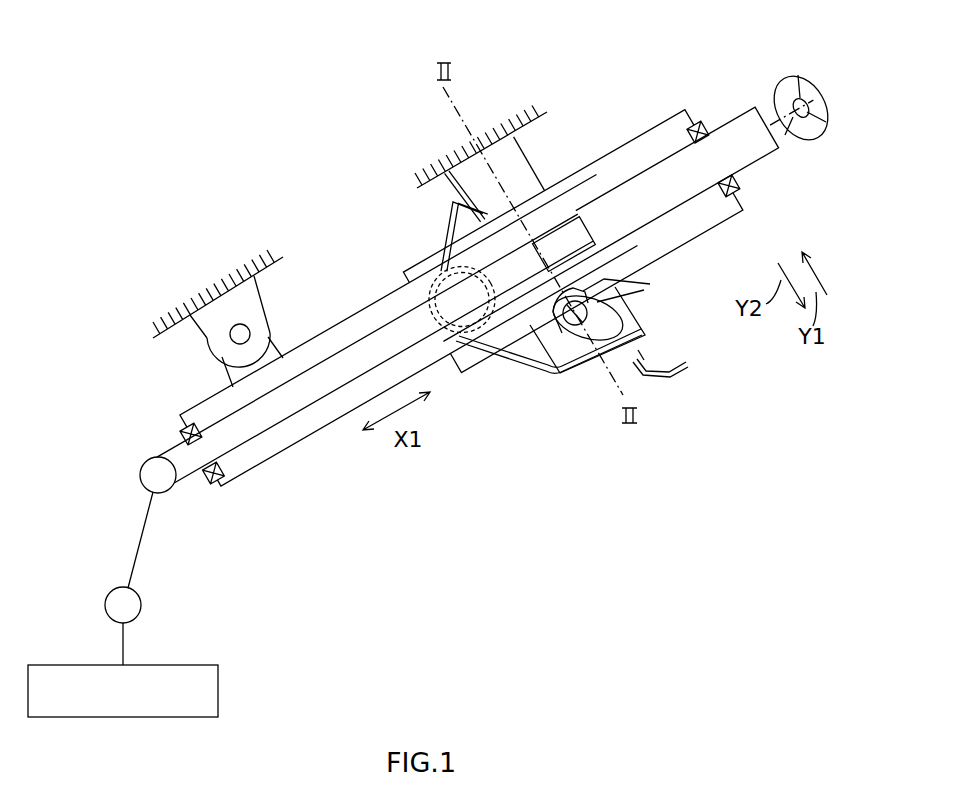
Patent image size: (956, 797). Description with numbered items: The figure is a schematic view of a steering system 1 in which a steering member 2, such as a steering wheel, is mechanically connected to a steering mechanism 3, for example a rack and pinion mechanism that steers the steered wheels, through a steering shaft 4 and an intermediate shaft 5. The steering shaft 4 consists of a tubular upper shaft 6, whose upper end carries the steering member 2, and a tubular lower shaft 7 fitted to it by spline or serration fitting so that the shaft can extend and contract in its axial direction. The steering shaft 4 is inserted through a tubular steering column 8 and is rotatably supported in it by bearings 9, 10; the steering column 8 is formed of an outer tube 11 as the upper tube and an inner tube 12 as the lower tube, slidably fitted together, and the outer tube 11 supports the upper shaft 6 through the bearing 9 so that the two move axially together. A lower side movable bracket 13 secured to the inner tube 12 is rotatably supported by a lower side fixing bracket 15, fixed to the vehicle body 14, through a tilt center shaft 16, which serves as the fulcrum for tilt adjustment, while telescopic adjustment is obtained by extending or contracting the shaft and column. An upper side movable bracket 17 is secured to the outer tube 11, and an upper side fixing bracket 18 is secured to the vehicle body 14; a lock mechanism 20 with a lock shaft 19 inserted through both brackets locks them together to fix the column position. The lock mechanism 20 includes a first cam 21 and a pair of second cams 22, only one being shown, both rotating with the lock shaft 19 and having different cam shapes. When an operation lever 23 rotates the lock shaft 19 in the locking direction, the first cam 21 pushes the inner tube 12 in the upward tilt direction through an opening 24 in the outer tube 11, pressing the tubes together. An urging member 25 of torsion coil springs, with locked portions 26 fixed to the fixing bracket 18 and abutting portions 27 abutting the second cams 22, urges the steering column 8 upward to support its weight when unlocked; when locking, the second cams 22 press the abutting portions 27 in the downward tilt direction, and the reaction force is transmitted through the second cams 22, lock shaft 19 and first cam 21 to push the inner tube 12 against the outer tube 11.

The steering system 1 is at (231, 180).
The steering member 2 is at (792, 80).
The steering mechanism 3 is at (218, 690).
The steering shaft 4 is at (485, 278).
The intermediate shaft 5 is at (143, 548).
The upper shaft 6 is at (770, 152).
The lower shaft 7 is at (304, 405).
The steering column 8 is at (476, 312).
The bearing 9 is at (738, 188).
The bearing 10 is at (206, 480).
The outer tube 11 is at (615, 150).
The inner tube 12 is at (372, 300).
The lower side movable bracket 13 is at (240, 370).
The vehicle body 14 is at (167, 318).
The lower side fixing bracket 15 is at (207, 335).
The tilt center shaft 16 is at (249, 328).
The upper side movable bracket 17 is at (566, 380).
The upper side fixing bracket 18 is at (505, 148).
The lock shaft 19 is at (590, 306).
The lock mechanism 20 is at (552, 342).
The first cam 21 is at (598, 288).
The second cam 22 is at (612, 322).
The operation lever 23 is at (692, 367).
The opening 24 is at (520, 346).
The urging member 25 is at (439, 227).
The locked portion 26 is at (482, 205).
The abutting portion 27 is at (641, 358).